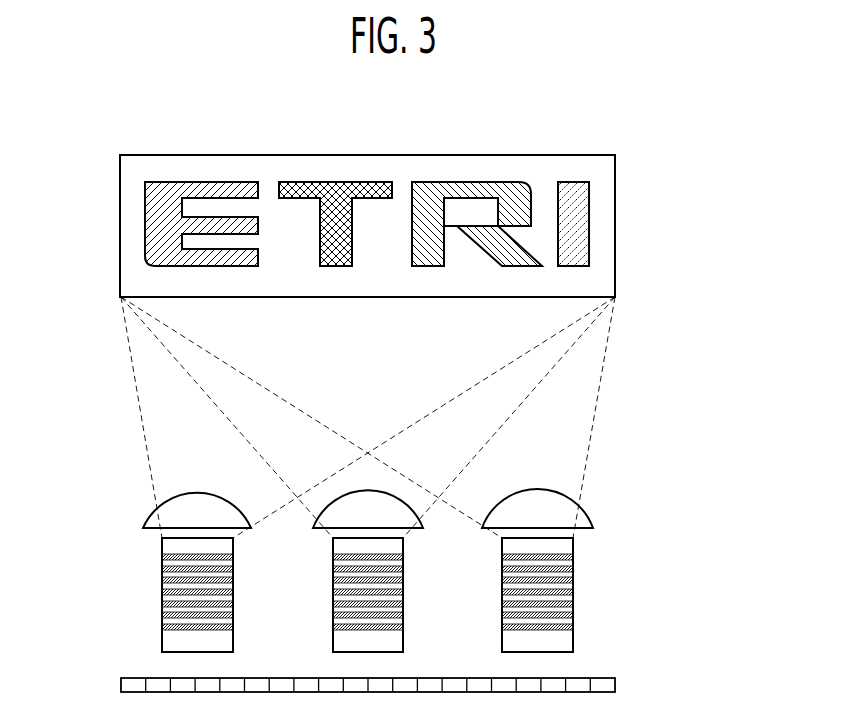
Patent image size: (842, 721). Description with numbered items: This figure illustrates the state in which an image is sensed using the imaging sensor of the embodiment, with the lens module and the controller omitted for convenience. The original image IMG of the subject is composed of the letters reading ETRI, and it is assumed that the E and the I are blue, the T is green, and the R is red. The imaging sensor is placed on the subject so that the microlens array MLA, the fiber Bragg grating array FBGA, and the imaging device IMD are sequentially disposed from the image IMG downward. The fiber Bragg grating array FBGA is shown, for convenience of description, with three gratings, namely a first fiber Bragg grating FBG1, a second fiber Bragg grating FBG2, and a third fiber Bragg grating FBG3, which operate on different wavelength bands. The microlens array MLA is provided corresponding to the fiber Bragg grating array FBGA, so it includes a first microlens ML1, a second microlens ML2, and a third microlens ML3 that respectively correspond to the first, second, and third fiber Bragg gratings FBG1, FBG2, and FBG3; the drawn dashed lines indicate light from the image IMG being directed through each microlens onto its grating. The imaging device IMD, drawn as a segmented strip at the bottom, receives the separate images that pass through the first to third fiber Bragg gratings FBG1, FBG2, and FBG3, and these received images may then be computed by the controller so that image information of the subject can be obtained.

The image IMG is at (120, 230).
The first microlens ML1 is at (190, 500).
The second microlens ML2 is at (393, 505).
The third microlens ML3 is at (548, 500).
The microlens array MLA is at (436, 484).
The first fiber Bragg grating FBG1 is at (233, 590).
The second fiber Bragg grating FBG2 is at (403, 590).
The third fiber Bragg grating FBG3 is at (638, 561).
The fiber Bragg grating array FBGA is at (452, 593).
The imaging device IMD is at (615, 685).